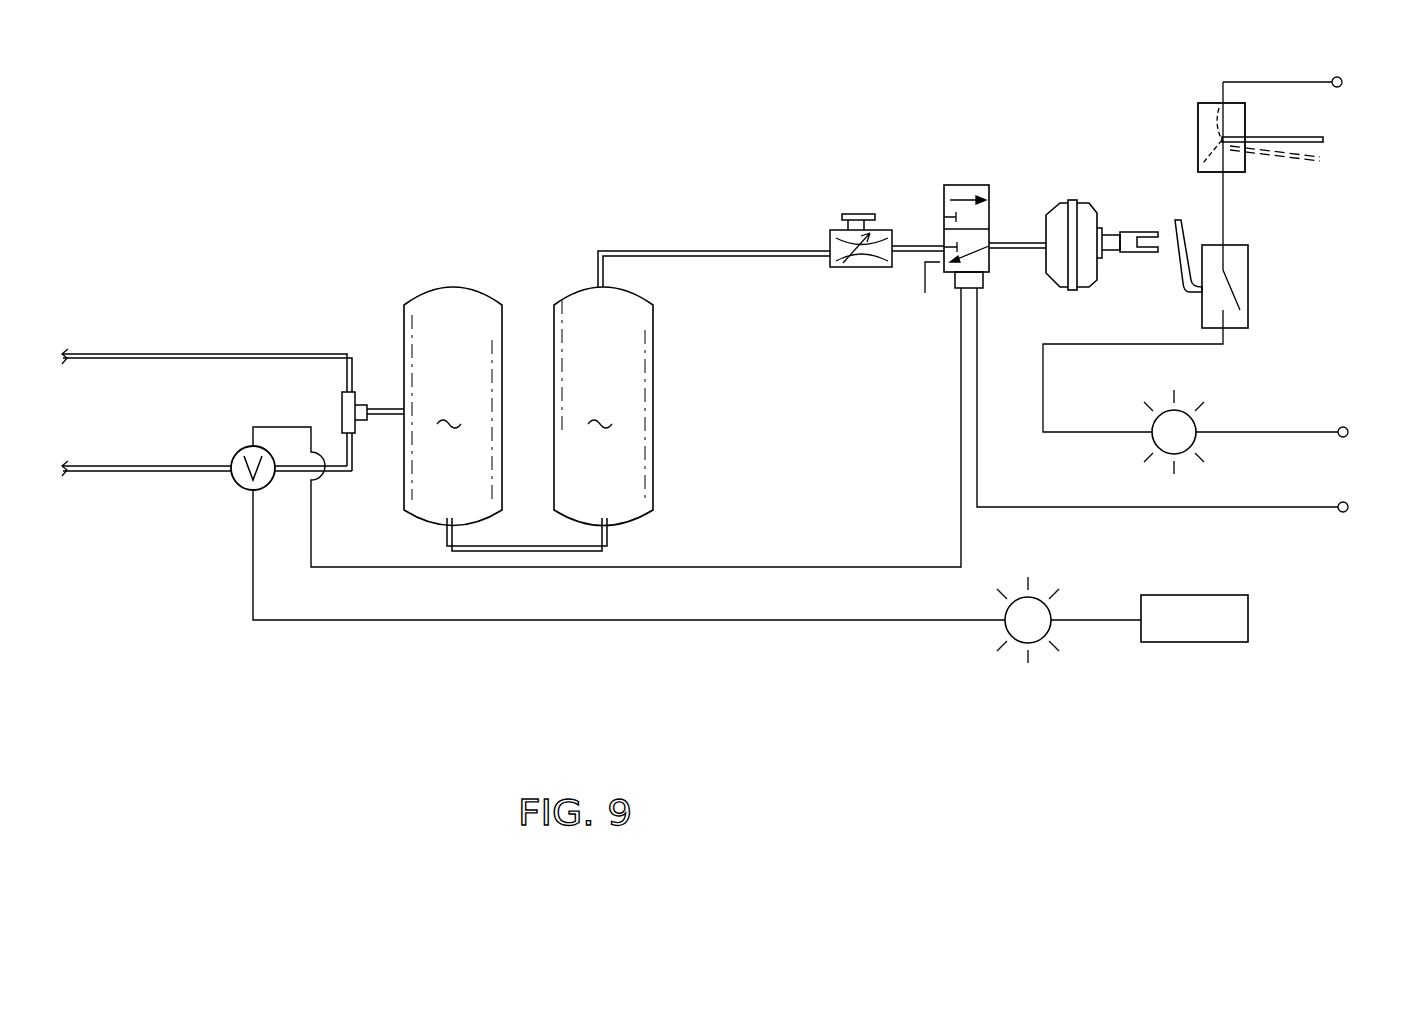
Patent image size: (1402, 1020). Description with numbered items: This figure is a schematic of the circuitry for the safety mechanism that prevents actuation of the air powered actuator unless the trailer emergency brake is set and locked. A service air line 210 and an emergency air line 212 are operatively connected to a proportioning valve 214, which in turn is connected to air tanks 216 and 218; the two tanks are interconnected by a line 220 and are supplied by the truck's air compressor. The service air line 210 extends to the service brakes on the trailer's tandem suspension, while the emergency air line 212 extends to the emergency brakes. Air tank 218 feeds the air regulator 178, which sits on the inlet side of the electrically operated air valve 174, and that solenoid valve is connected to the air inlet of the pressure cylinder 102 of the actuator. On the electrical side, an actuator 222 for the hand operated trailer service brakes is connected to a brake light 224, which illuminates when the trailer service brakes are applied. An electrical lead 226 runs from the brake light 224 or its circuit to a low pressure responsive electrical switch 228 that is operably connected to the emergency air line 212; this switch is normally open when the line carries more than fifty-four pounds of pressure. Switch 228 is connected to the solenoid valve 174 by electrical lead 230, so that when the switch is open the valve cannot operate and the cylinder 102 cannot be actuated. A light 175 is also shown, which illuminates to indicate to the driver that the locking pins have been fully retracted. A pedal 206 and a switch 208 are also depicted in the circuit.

The pressure cylinder 102 is at (1055, 282).
The electrically operated air valve 174 is at (990, 184).
The light 175 is at (1177, 430).
The air regulator 178 is at (862, 213).
The brake pedal 206 is at (1248, 172).
The pedal switch 208 is at (1275, 137).
The service air line 210 is at (137, 355).
The emergency air line 212 is at (102, 467).
The proportioning valve 214 is at (356, 392).
The air tank 216 is at (453, 406).
The air tank 218 is at (692, 388).
The line 220 is at (477, 545).
The actuator 222 is at (1173, 605).
The brake light 224 is at (1028, 613).
The electrical lead 226 is at (790, 622).
The low pressure responsive electrical switch 228 is at (243, 490).
The electrical lead 230 is at (750, 565).